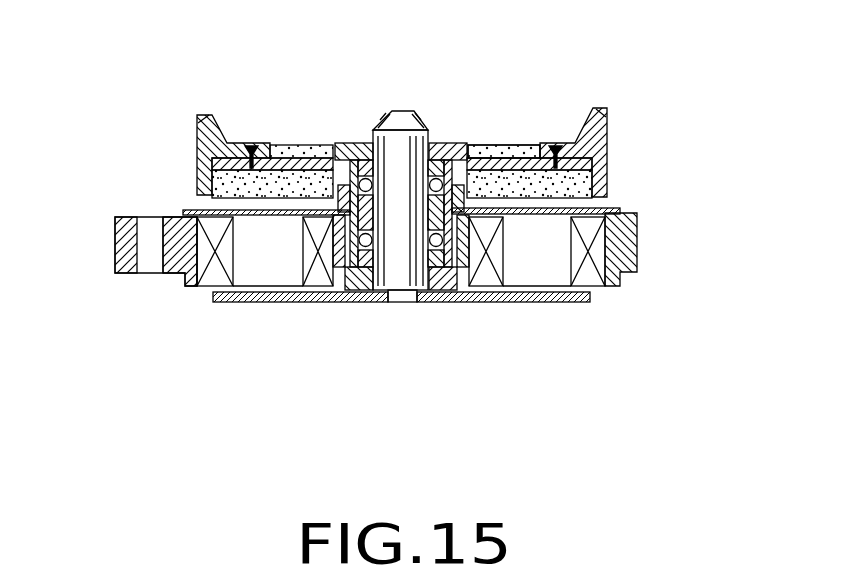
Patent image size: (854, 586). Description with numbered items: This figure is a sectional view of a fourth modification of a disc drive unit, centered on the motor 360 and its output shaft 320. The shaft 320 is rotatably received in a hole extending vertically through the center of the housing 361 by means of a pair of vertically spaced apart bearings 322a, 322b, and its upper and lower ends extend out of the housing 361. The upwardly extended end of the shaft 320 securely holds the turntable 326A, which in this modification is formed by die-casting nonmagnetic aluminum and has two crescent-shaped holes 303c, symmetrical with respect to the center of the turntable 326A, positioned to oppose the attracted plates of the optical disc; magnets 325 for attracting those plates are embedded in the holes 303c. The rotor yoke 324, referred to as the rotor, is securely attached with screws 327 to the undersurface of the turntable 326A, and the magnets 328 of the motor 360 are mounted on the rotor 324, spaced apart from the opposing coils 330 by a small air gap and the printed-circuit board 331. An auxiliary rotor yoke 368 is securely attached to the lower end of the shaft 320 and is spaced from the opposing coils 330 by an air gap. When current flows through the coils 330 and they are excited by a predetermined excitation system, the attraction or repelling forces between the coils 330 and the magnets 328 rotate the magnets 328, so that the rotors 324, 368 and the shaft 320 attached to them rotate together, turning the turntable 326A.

The shaft 320 is at (413, 110).
The bearing 322a is at (350, 284).
The bearing 322b is at (355, 143).
The rotor yoke 324 is at (526, 145).
The magnet 325 is at (306, 144).
The turntable 326A is at (200, 114).
The screw 327 is at (555, 145).
The magnet 328 is at (596, 178).
The coil 330 is at (210, 222).
The printed-circuit board 331 is at (273, 217).
The motor 360 is at (643, 237).
The housing 361 is at (118, 232).
The auxiliary rotor yoke 368 is at (518, 302).
The crescent-shaped hole 303c is at (262, 128).